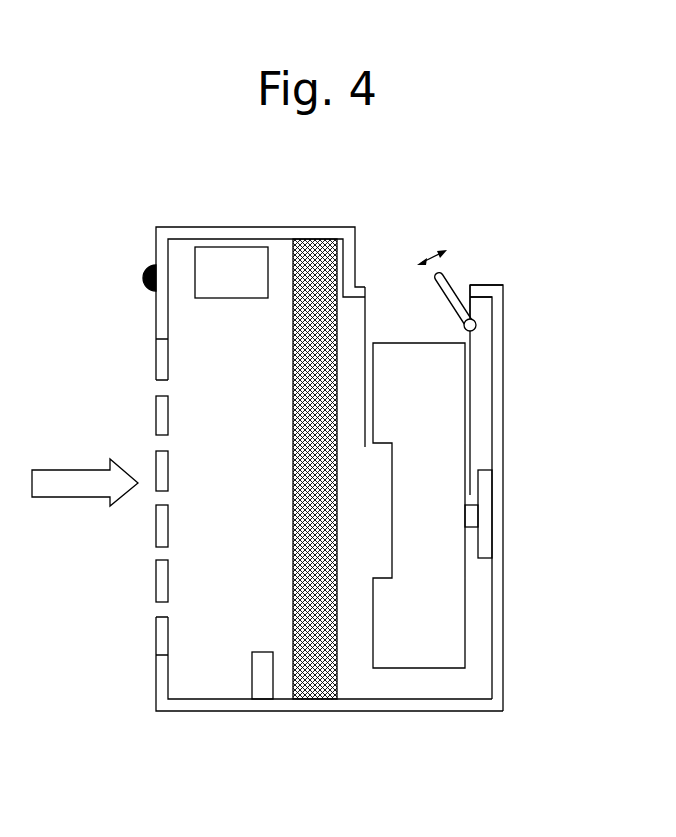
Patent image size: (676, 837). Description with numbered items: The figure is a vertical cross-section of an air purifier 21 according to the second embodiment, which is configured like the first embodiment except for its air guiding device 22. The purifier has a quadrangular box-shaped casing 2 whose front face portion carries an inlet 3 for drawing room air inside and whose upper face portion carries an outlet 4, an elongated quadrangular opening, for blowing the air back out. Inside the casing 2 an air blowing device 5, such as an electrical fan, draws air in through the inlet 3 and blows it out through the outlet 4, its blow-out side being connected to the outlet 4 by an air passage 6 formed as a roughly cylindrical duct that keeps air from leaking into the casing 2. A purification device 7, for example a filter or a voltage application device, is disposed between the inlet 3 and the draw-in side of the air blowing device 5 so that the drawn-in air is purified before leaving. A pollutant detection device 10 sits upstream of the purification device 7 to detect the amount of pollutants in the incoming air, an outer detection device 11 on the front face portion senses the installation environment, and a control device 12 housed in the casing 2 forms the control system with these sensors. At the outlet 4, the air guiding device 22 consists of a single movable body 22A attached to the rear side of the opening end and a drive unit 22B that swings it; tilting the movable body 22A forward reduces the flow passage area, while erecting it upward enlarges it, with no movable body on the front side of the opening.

The air purifier 21 is at (279, 426).
The casing 2 is at (156, 323).
The inlet 3 is at (156, 558).
The outlet 4 is at (407, 318).
The air blowing device 5 is at (450, 583).
The air passage 6 is at (478, 346).
The purification device 7 is at (315, 690).
The pollutant detection device 10 is at (262, 690).
The outer detection device 11 is at (141, 275).
The control device 12 is at (228, 253).
The air guiding device 22 is at (504, 349).
The movable body 22A is at (452, 290).
The drive unit 22B is at (482, 315).